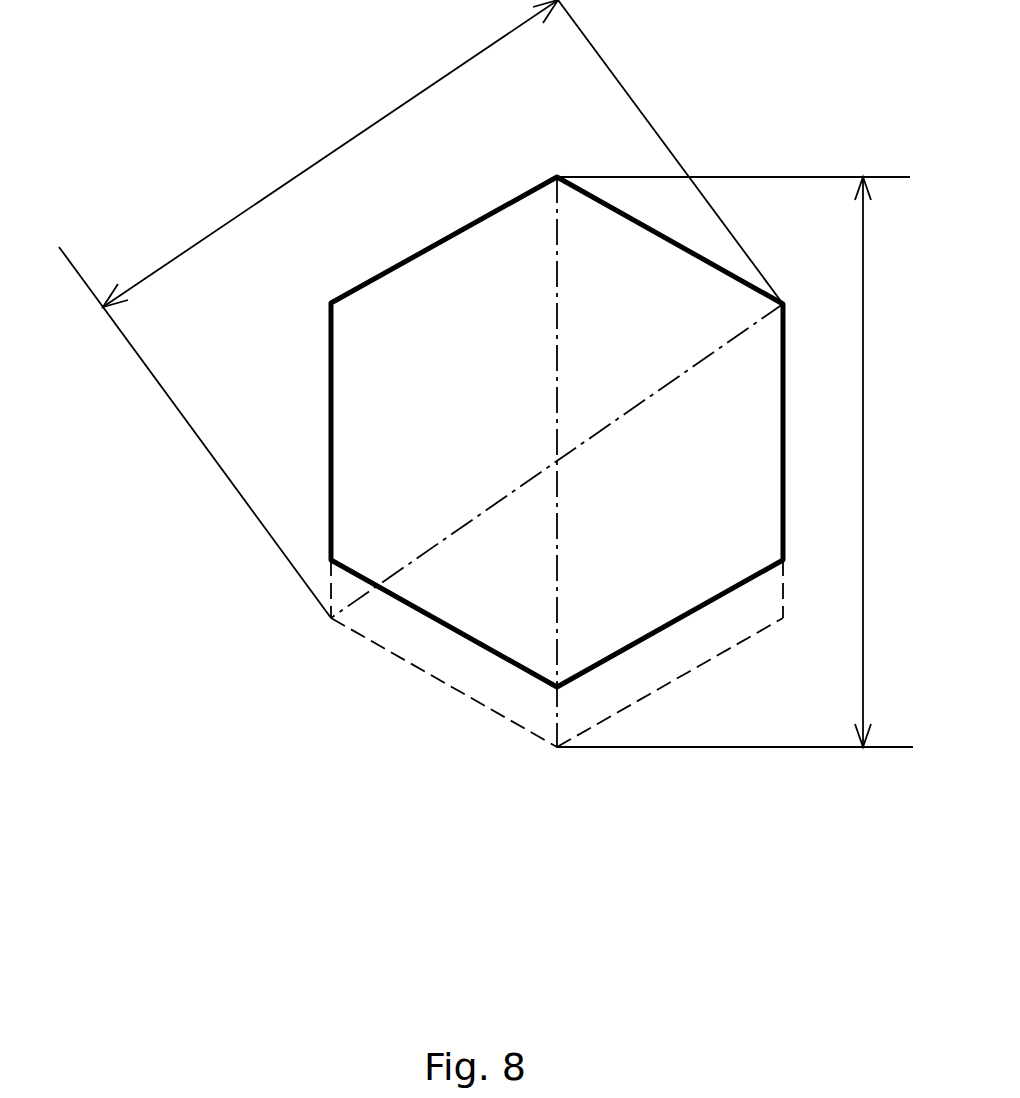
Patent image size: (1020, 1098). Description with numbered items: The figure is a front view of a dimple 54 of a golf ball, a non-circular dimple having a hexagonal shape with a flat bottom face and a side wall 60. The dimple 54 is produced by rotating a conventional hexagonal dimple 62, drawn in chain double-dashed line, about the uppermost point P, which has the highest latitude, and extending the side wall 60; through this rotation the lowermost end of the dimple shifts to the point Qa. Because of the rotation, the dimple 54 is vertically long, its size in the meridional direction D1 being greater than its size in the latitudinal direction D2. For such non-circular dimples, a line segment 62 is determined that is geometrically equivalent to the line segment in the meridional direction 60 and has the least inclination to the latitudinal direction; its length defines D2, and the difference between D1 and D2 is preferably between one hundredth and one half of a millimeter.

The dimple 54 is at (487, 603).
The side wall 60 is at (558, 555).
The conventional hexagonal dimple 62 is at (427, 549).
The uppermost point P is at (557, 177).
The shifted lowermost end Qa is at (557, 750).
The size in the meridional direction D1 is at (735, 462).
The size in the latitudinal direction D2 is at (421, 309).